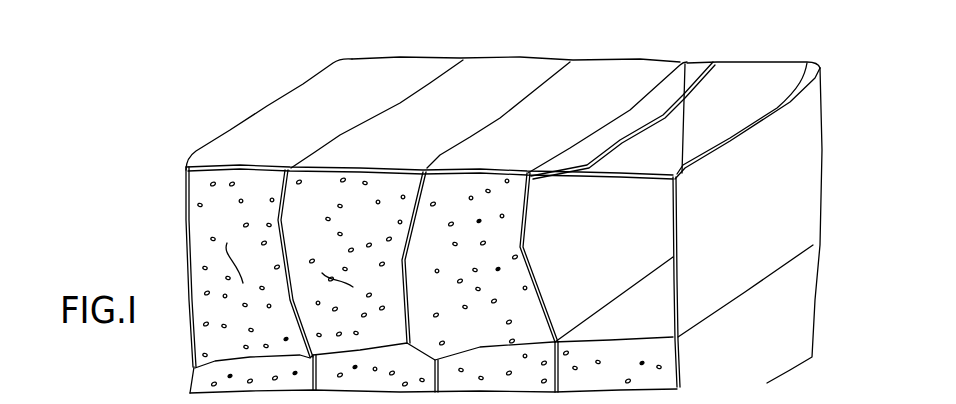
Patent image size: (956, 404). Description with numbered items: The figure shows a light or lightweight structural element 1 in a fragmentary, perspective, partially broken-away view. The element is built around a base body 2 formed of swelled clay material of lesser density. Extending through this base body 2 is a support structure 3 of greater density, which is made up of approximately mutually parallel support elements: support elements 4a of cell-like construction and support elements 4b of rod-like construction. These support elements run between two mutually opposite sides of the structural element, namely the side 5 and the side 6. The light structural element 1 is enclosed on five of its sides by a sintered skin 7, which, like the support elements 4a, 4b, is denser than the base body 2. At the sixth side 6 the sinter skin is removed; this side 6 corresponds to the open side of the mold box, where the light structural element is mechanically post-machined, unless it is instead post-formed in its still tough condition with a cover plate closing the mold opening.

The light structural element 1 is at (251, 79).
The base body 2 is at (217, 228).
The support structure 3 is at (536, 239).
The cell-like support elements 4a is at (413, 190).
The rod-like support elements 4b is at (488, 288).
The side 5 is at (807, 113).
The sixth side 6 is at (198, 337).
The sintered skin 7 is at (232, 138).